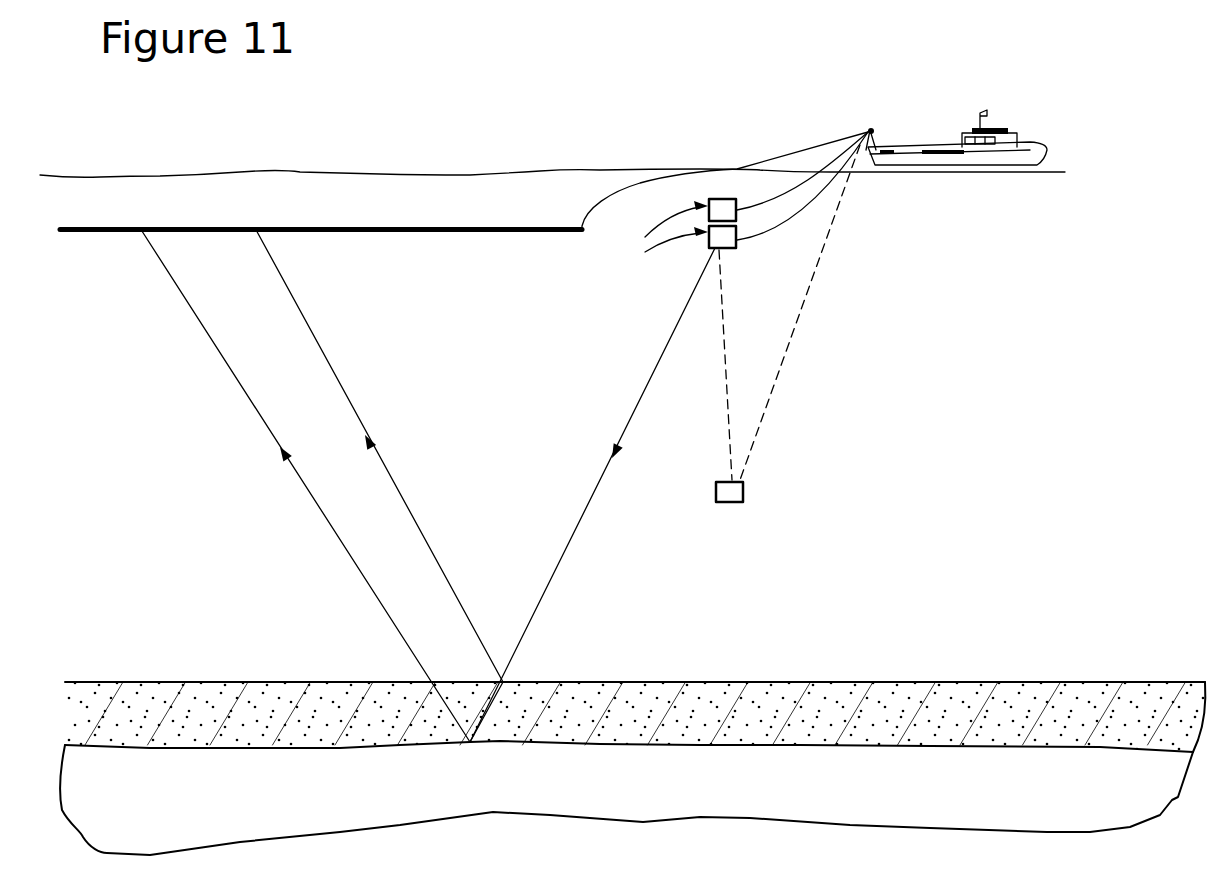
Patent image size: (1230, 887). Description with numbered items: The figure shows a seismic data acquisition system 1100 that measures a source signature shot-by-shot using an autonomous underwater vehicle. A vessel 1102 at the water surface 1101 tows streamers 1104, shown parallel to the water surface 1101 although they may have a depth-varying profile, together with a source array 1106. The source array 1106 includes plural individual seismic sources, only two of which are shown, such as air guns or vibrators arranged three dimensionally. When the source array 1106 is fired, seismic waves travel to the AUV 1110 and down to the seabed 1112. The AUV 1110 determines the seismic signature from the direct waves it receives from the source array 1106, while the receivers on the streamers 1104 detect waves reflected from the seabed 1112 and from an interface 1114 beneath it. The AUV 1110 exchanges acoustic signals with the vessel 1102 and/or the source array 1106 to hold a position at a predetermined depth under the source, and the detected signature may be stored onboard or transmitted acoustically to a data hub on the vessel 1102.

The seismic data acquisition system 1100 is at (565, 108).
The water surface 1101 is at (238, 180).
The vessel 1102 is at (928, 163).
The streamers 1104 is at (445, 232).
The source array 1106 is at (718, 204).
The AUV 1110 is at (732, 503).
The seabed 1112 is at (945, 682).
The interface under the seabed 1114 is at (470, 745).